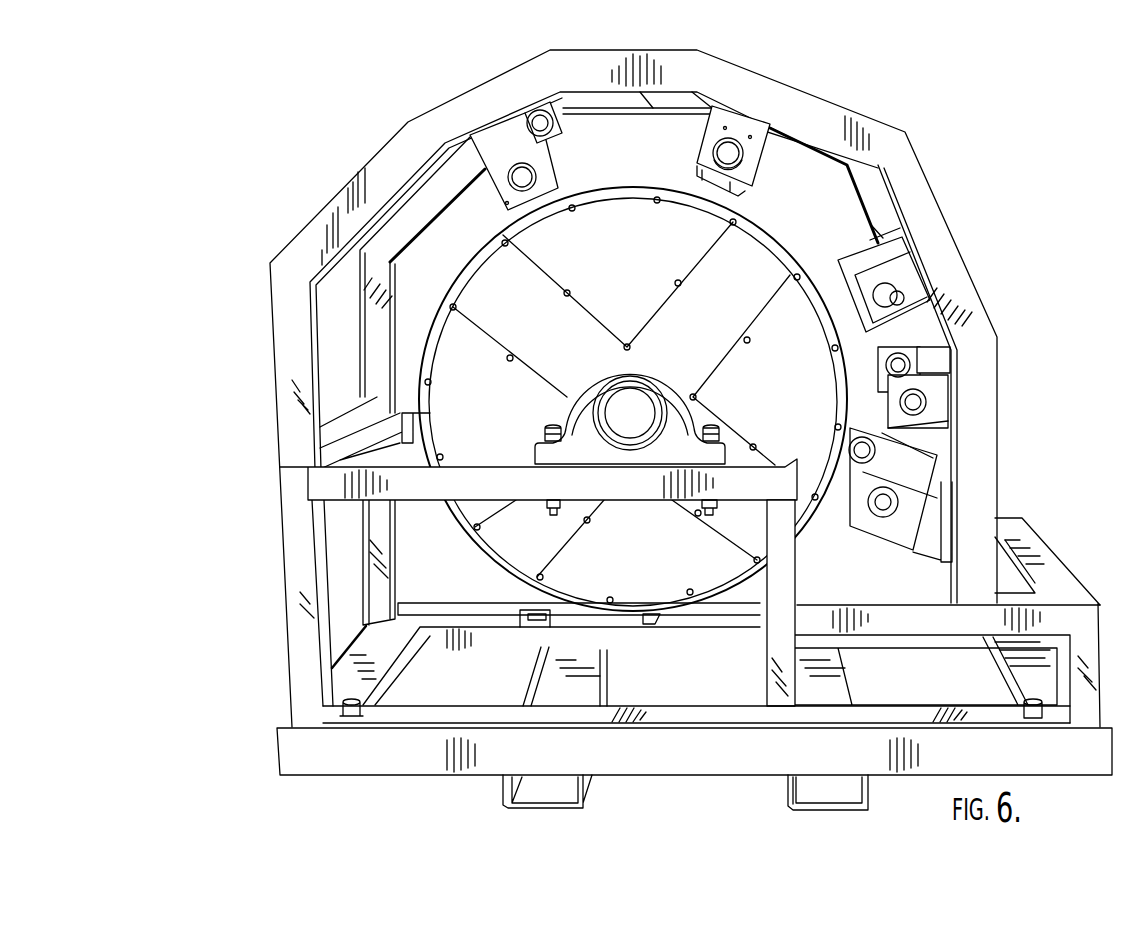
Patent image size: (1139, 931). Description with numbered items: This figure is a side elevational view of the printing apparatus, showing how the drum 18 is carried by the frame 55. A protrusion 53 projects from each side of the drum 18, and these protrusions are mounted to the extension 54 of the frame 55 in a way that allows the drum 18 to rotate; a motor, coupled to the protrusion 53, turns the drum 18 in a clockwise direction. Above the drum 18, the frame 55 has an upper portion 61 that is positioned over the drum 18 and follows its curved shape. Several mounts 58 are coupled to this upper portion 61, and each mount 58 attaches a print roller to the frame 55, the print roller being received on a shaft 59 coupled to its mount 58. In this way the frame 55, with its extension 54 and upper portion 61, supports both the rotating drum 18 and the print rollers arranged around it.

The drum 18 is at (622, 192).
The protrusion 53 is at (628, 423).
The extension 54 is at (778, 710).
The frame 55 is at (260, 798).
The mount 58 is at (493, 137).
The shaft 59 is at (937, 282).
The upper portion 61 is at (613, 57).